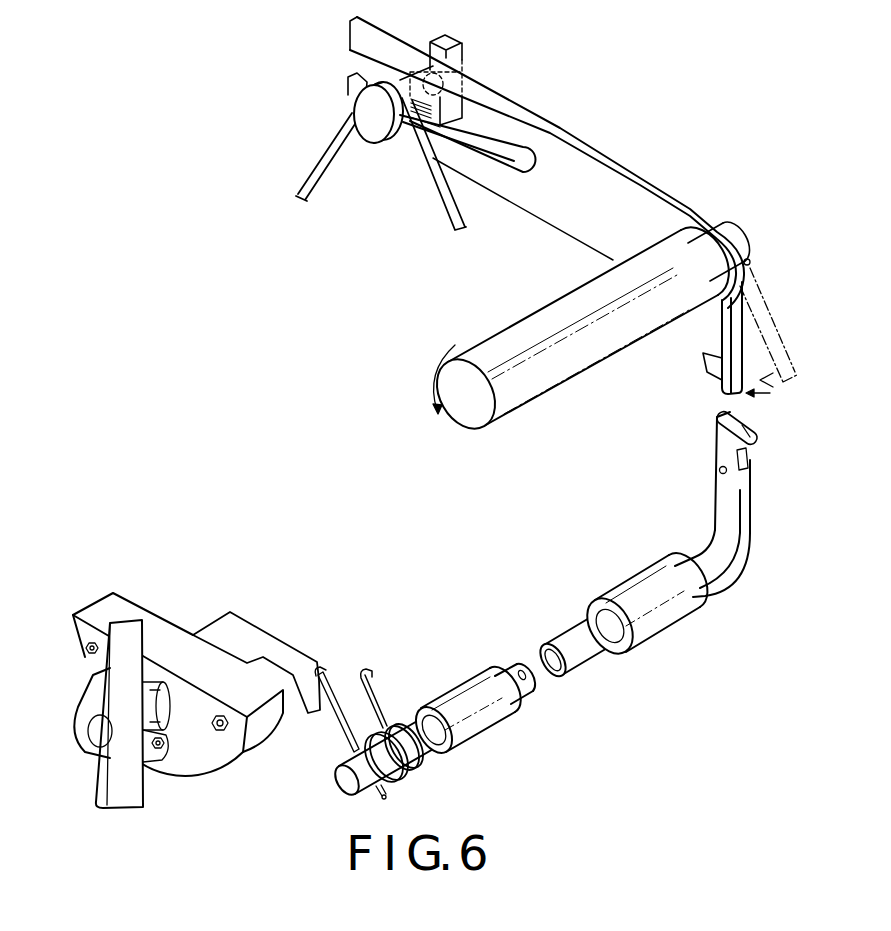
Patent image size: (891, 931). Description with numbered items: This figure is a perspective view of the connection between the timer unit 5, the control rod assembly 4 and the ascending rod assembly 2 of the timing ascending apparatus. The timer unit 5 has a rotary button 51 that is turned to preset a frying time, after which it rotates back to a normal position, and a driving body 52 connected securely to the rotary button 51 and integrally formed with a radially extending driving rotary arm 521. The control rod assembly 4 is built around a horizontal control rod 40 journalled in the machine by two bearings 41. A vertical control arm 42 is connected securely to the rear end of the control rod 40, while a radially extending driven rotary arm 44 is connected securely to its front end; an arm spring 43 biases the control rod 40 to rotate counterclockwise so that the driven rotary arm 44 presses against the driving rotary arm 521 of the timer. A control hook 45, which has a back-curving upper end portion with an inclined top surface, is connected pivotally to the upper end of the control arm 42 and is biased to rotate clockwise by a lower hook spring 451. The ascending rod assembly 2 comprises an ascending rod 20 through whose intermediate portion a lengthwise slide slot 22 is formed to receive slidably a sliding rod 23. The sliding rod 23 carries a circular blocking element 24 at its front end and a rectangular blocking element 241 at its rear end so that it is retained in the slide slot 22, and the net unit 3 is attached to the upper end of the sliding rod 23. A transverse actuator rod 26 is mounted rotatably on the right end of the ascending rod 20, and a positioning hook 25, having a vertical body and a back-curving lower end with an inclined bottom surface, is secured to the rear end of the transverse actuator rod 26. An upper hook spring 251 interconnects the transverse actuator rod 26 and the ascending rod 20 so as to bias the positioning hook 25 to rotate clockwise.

The ascending rod assembly 2 is at (588, 228).
The ascending rod 20 is at (553, 150).
The lengthwise slide slot 22 is at (508, 160).
The sliding rod 23 is at (403, 82).
The circular blocking element 24 is at (368, 117).
The rectangular blocking element 241 is at (461, 52).
The positioning hook 25 is at (712, 380).
The upper hook spring 251 is at (750, 262).
The transverse actuator rod 26 is at (535, 387).
The net unit 3 is at (411, 126).
The control rod assembly 4 is at (570, 604).
The horizontal control rod 40 is at (562, 638).
The bearings 41 is at (475, 725).
The vertical control arm 42 is at (732, 498).
The arm spring 43 is at (395, 730).
The driven rotary arm 44 is at (320, 688).
The control hook 45 is at (756, 432).
The lower hook spring 451 is at (717, 444).
The timer unit 5 is at (213, 683).
The rotary button 51 is at (130, 798).
The driving body 52 is at (243, 630).
The driving rotary arm 521 is at (282, 650).